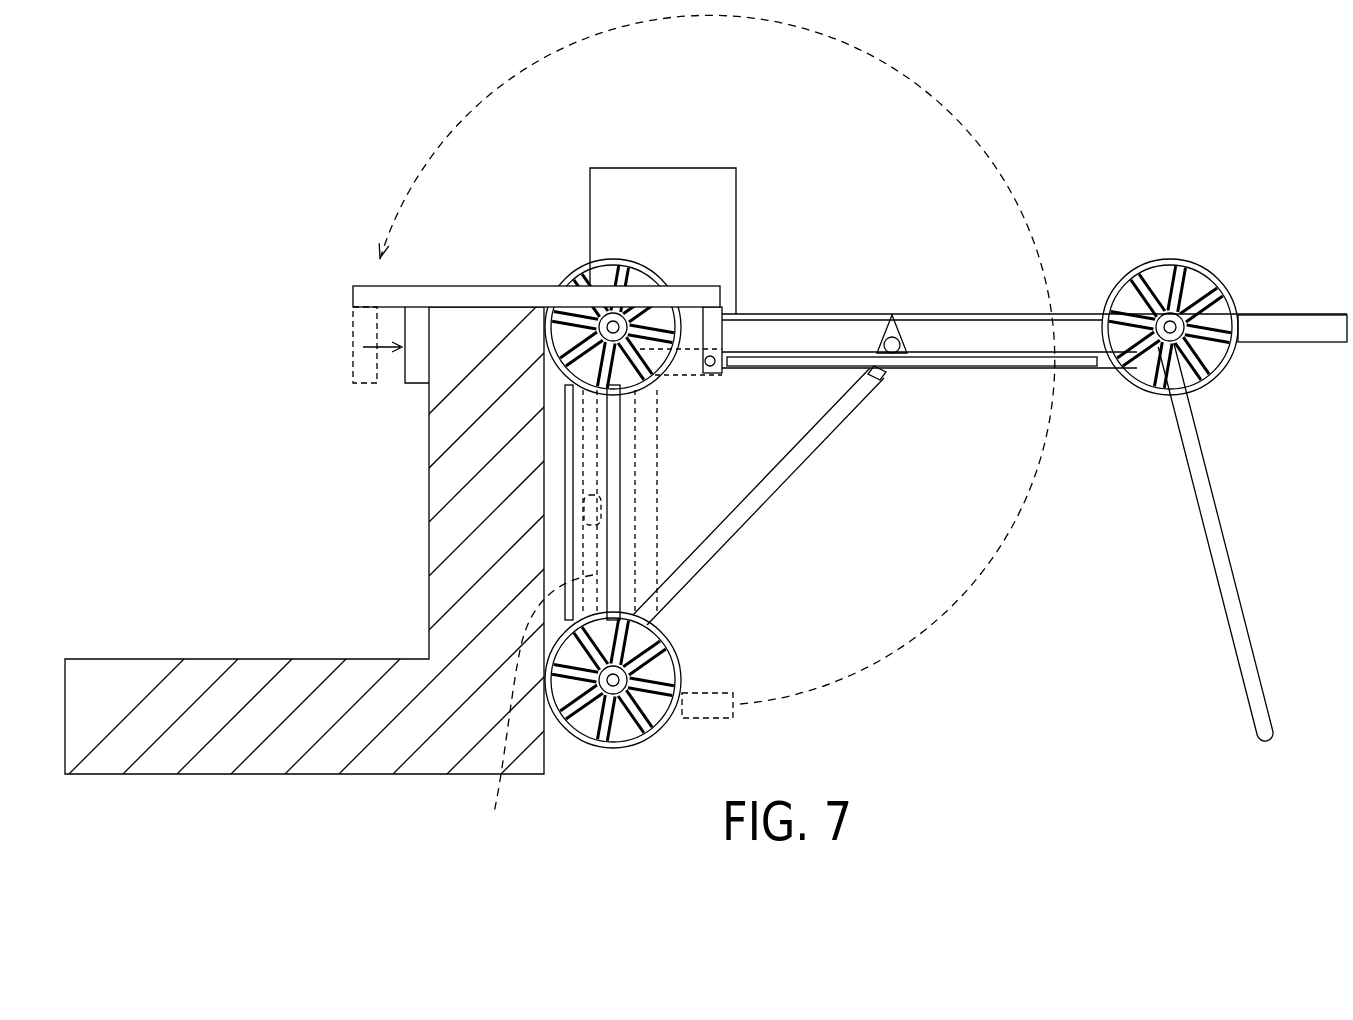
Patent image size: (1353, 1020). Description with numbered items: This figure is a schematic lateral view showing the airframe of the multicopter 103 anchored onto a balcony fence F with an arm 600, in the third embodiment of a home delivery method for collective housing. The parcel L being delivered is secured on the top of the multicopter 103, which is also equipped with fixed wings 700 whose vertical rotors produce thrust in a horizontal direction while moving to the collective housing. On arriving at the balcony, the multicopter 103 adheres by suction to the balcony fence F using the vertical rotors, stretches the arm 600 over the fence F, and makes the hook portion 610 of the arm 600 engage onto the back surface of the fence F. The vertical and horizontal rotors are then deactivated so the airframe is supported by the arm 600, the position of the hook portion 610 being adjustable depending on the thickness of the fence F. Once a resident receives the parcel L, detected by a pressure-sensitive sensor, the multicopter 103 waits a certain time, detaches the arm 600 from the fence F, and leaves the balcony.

The arm 600 is at (468, 292).
The hook portion 610 is at (419, 385).
The parcel L is at (713, 203).
The multicopter 103 is at (1007, 293).
The fixed wings 700 is at (1017, 362).
The balcony fence F is at (291, 738).